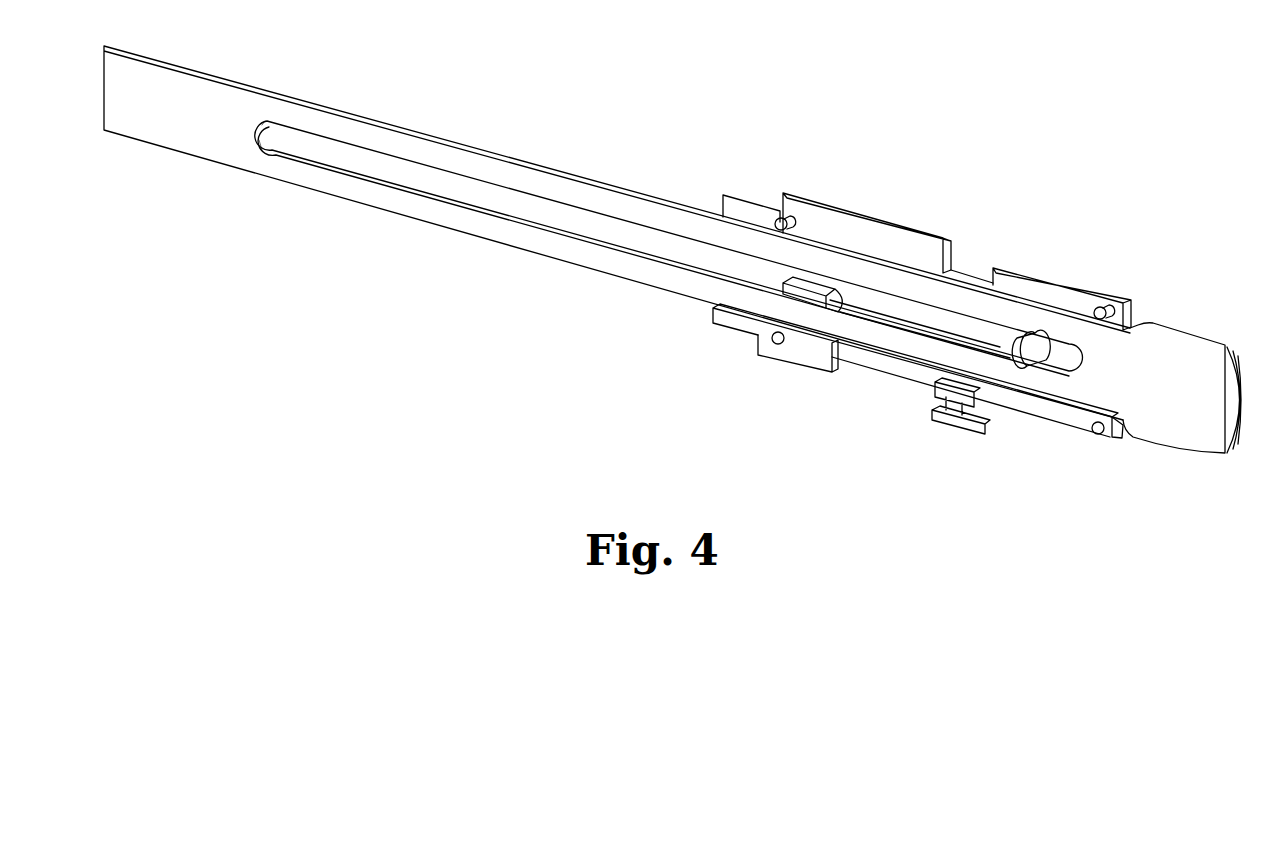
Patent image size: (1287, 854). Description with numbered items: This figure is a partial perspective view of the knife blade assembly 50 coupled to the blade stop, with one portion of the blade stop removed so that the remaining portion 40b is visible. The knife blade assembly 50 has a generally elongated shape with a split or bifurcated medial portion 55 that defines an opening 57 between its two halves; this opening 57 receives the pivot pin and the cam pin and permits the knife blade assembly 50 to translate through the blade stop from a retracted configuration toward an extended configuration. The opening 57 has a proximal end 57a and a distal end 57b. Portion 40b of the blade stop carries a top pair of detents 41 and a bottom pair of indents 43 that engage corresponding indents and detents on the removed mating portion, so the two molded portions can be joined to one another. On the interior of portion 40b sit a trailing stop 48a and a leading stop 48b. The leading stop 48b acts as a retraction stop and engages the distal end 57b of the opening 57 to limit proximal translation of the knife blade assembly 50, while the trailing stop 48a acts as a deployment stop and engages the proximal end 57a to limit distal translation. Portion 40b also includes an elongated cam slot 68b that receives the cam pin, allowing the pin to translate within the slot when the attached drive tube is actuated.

The split or bifurcated medial portion 55 is at (468, 131).
The knife blade assembly 50 is at (390, 225).
The opening 57 is at (547, 216).
The proximal end of opening 57a is at (262, 136).
The distal end of opening 57b is at (1053, 362).
The portion of blade stop 40b is at (930, 246).
The detents 41 is at (786, 216).
The indents 43 is at (771, 345).
The trailing stop 48a is at (807, 297).
The leading stop 48b is at (988, 423).
The elongated cam slot 68b is at (923, 321).